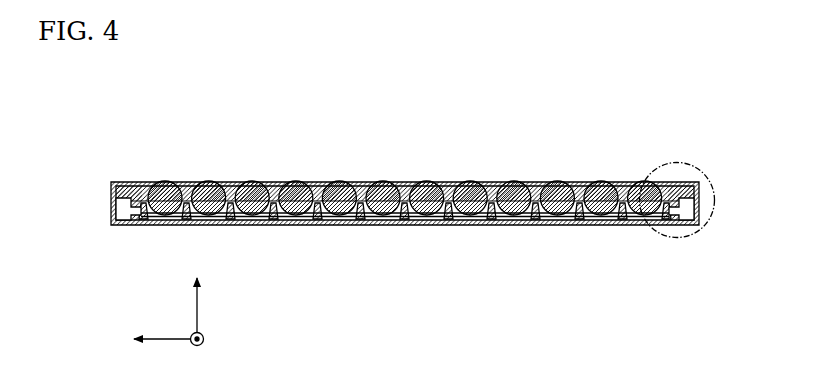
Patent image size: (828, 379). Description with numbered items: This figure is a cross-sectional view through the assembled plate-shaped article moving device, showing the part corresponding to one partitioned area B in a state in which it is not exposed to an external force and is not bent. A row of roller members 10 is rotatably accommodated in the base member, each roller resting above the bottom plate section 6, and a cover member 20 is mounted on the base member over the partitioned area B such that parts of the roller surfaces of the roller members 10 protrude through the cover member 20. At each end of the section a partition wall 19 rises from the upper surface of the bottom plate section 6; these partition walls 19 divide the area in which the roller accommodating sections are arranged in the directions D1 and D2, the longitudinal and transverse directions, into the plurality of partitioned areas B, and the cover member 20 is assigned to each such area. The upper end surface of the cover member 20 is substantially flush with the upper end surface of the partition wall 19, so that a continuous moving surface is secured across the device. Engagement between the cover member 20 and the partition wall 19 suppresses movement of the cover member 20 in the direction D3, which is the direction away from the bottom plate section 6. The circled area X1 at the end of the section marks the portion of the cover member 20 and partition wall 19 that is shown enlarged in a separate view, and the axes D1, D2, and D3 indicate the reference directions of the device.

The partitioned area B is at (411, 180).
The bottom plate section 6 is at (597, 224).
The roller member 10 is at (603, 178).
The partition wall 19 is at (112, 205).
The cover member 20 is at (402, 156).
The area X1 is at (700, 163).
The direction D1 is at (148, 310).
The direction D2 is at (210, 352).
The direction D3 is at (197, 291).